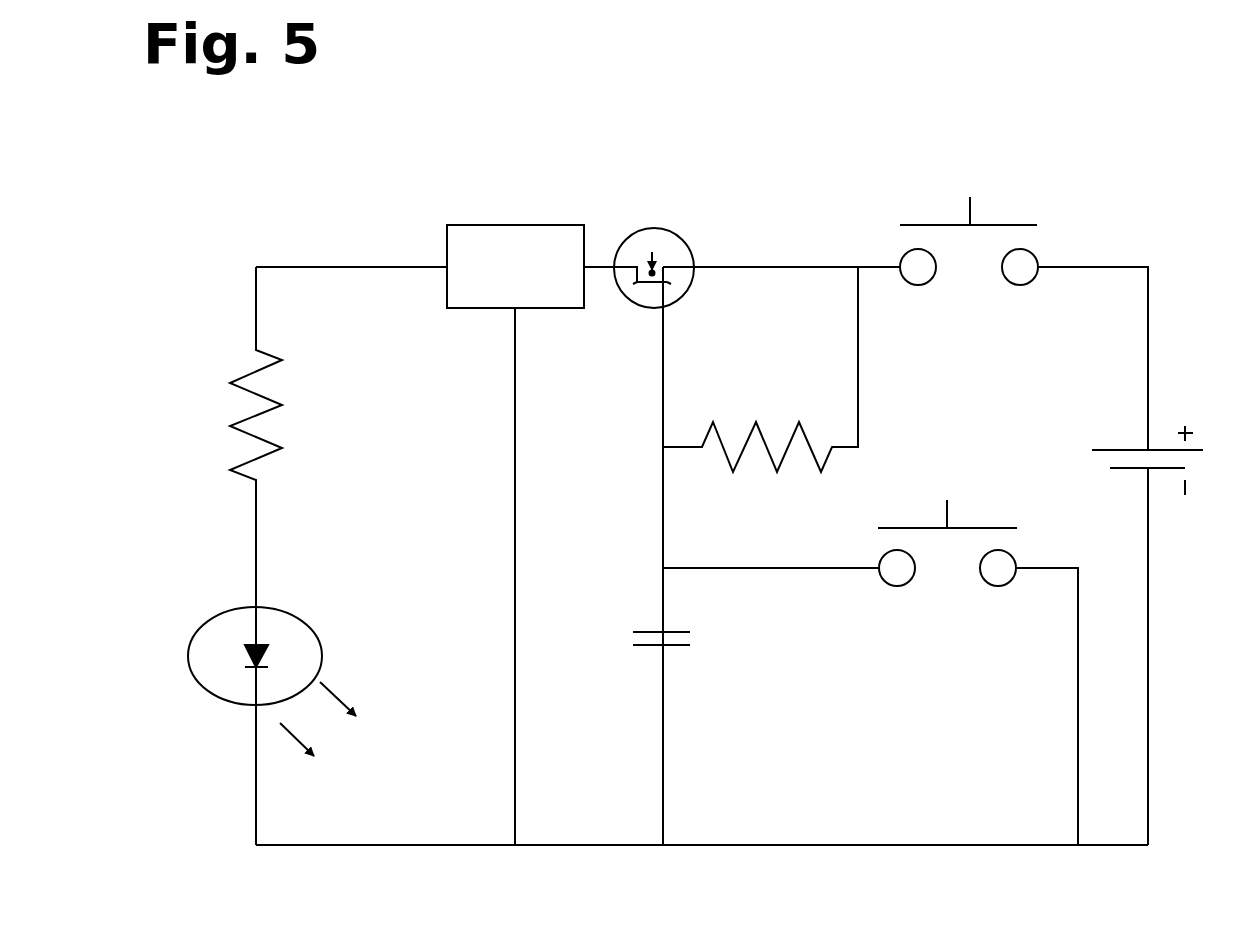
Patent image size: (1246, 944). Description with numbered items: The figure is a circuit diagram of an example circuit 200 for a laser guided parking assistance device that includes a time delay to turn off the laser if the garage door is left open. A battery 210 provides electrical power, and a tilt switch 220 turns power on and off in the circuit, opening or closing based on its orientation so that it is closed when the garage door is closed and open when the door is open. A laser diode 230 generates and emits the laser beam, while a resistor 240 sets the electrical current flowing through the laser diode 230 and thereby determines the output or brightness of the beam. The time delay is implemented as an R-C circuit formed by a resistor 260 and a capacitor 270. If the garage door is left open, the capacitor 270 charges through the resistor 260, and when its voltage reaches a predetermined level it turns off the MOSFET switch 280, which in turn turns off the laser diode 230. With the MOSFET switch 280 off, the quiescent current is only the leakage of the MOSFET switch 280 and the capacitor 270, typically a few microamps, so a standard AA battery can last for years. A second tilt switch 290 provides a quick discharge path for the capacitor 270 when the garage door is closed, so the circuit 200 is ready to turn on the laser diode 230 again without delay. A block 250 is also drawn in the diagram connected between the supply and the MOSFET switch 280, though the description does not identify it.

The circuit 200 is at (1126, 230).
The battery 210 is at (1107, 450).
The tilt switch 220 is at (914, 225).
The laser diode 230 is at (228, 607).
The resistor 240 is at (237, 378).
The controller 250 is at (488, 225).
The resistor 260 is at (790, 432).
The capacitor 270 is at (640, 632).
The MOSFET switch 280 is at (656, 228).
The second tilt switch 290 is at (893, 528).